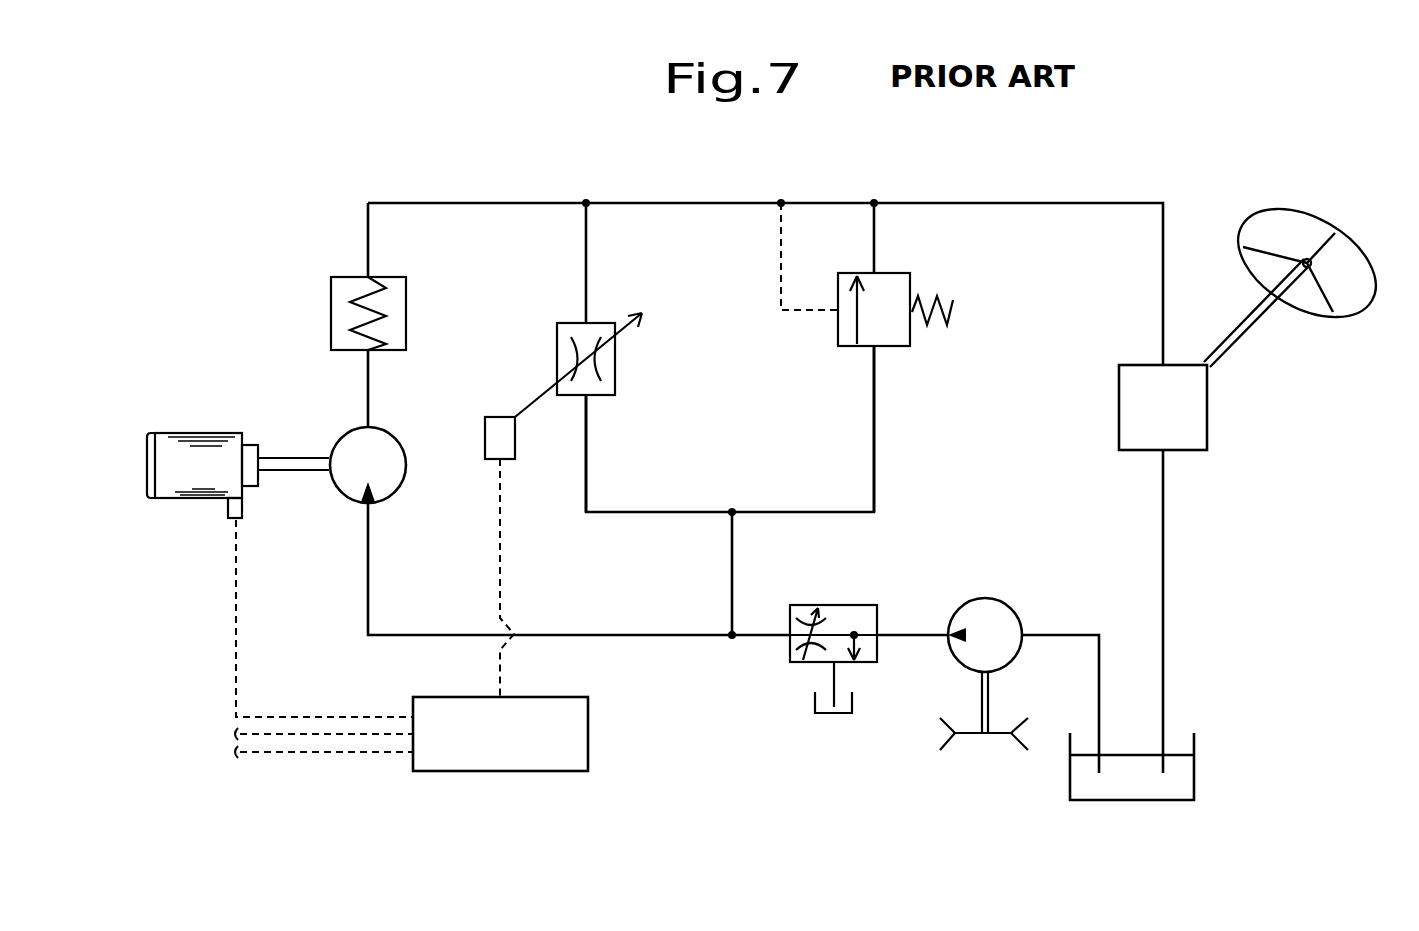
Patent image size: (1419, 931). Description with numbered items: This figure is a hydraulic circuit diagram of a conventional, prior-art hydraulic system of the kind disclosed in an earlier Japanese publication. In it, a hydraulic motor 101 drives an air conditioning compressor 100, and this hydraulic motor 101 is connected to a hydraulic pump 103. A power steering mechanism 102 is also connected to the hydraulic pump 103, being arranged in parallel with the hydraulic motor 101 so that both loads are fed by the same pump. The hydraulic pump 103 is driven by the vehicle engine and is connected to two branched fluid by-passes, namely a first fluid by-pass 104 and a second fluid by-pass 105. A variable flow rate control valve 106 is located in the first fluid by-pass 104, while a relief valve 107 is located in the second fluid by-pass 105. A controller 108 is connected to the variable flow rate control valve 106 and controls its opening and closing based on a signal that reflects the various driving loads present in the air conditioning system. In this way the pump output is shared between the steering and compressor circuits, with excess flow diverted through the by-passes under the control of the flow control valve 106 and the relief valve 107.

The air conditioning compressor 100 is at (168, 498).
The hydraulic motor 101 is at (392, 430).
The power steering mechanism 102 is at (1195, 413).
The hydraulic pump 103 is at (993, 600).
The first fluid by-pass 104 is at (586, 445).
The second fluid by-pass 105 is at (874, 468).
The variable flow rate control valve 106 is at (606, 362).
The relief valve 107 is at (905, 334).
The controller 108 is at (533, 762).